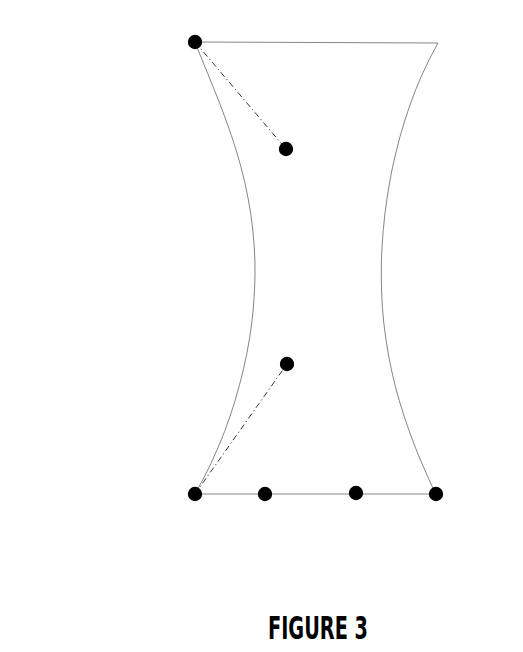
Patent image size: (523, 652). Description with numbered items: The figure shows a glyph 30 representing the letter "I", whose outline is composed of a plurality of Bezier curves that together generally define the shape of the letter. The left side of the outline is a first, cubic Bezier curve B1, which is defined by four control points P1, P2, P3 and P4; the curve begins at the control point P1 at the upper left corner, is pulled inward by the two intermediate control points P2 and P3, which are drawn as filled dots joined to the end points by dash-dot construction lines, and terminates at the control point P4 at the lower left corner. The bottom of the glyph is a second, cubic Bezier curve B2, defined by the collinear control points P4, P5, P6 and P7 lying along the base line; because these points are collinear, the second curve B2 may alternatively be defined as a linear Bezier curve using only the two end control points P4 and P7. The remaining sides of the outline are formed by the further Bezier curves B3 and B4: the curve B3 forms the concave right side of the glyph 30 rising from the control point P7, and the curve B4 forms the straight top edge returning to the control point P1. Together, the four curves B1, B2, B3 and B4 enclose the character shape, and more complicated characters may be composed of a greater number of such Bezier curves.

The glyph 30 is at (331, 264).
The control point P1 is at (186, 28).
The control point P2 is at (298, 161).
The control point P3 is at (300, 354).
The control point P4 is at (186, 504).
The control point P5 is at (257, 504).
The control point P6 is at (348, 504).
The control point P7 is at (428, 504).
The first cubic Bezier curve B1 is at (225, 268).
The second cubic Bezier curve B2 is at (315, 481).
The Bezier curve B3 is at (409, 268).
The Bezier curve B4 is at (316, 29).